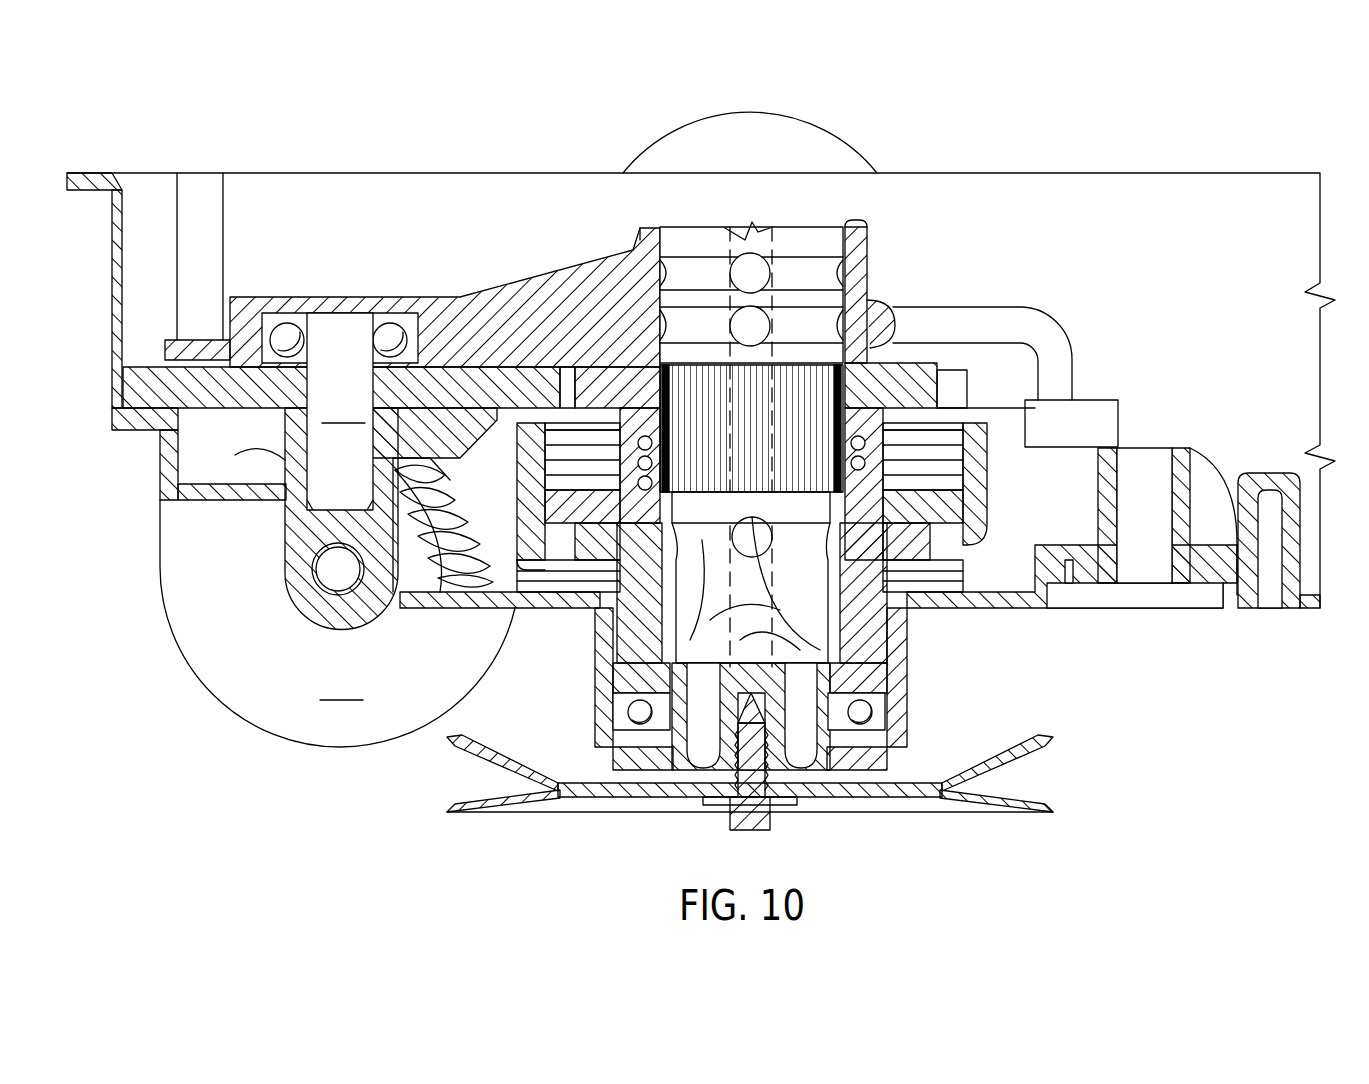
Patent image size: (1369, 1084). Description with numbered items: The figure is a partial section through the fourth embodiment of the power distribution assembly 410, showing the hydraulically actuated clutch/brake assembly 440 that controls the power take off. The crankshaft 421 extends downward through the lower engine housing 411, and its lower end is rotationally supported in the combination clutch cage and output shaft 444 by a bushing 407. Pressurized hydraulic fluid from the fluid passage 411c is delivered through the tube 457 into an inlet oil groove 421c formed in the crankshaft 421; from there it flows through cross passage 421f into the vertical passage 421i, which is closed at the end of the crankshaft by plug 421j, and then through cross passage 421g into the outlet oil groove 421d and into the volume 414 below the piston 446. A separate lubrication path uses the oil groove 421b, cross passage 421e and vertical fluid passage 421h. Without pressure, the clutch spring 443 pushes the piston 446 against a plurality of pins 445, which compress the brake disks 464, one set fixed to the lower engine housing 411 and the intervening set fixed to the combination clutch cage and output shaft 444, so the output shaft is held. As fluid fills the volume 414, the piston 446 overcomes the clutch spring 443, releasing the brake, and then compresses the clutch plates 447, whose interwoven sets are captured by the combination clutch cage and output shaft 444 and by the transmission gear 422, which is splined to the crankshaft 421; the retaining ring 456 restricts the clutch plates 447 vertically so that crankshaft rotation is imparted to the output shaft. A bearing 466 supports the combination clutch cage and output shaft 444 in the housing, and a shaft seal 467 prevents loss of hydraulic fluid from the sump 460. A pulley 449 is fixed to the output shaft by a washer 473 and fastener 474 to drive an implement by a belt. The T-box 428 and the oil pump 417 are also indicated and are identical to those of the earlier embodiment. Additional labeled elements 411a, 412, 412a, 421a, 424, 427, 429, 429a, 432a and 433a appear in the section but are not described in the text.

The power distribution assembly 410 is at (225, 122).
The sump 460 is at (1147, 215).
The lower engine housing 411 is at (740, 589).
The housing bottom wall 411a is at (522, 598).
The fluid passage 411c is at (985, 397).
The bearing support 412 is at (521, 300).
The support end face 412a is at (672, 236).
The volume 414 is at (955, 547).
The oil pump 417 is at (1185, 646).
The crankshaft 421 is at (793, 232).
The rotor core 421a is at (843, 395).
The oil groove 421b is at (860, 247).
The inlet oil groove 421c is at (850, 300).
The outlet oil groove 421d is at (636, 676).
The cross passage 421e is at (755, 285).
The cross passage 421f is at (755, 338).
The cross passage 421g is at (800, 602).
The vertical fluid passage 421h is at (738, 227).
The vertical passage 421i is at (702, 542).
The plug 421j is at (820, 652).
The transmission gear 422 is at (962, 405).
The output shaft 424 is at (340, 411).
The bearing 427 is at (289, 335).
The T-box 428 is at (266, 772).
The mounting plate 429 is at (142, 385).
The plate flange 429a is at (235, 455).
The worm wheel 432a is at (400, 592).
The thrust ball 433a is at (338, 570).
The clutch/brake assembly 440 is at (998, 552).
The clutch spring 443 is at (905, 433).
The combination clutch cage and output shaft 444 is at (627, 706).
The pins 445 is at (556, 583).
The piston 446 is at (935, 507).
The clutch plates 447 is at (950, 482).
The pulley 449 is at (1036, 782).
The retaining ring 456 is at (905, 462).
The tube 457 is at (1048, 337).
The brake disks 464 is at (568, 605).
The bearing 466 is at (640, 716).
The shaft seal 467 is at (862, 722).
The washer 473 is at (786, 806).
The fastener 474 is at (750, 830).
The bushing 407 is at (885, 615).